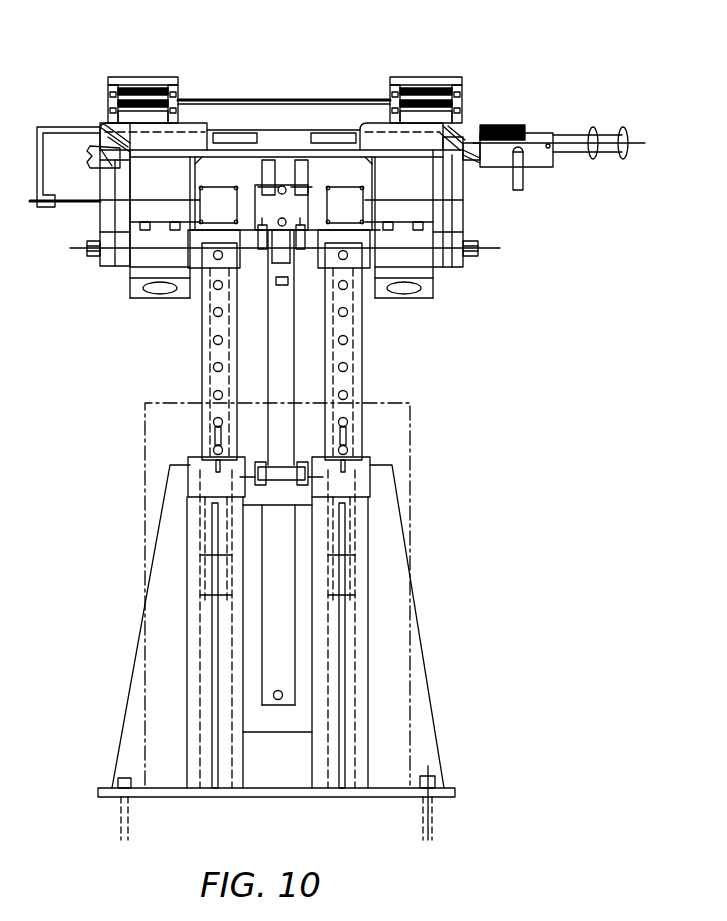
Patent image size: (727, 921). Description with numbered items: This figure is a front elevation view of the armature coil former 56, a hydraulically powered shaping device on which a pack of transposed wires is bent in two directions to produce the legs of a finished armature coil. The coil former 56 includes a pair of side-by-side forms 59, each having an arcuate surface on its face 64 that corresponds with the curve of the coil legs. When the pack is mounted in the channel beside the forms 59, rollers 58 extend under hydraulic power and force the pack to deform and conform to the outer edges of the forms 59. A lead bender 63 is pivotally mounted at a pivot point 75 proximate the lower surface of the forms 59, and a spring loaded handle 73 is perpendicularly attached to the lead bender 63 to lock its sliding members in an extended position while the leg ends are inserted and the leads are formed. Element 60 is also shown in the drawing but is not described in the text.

The armature coil former 56 is at (319, 421).
The rollers 58 is at (143, 77).
The forms 59 is at (112, 135).
The adjustment bolt 60 is at (86, 248).
The lead benders 63 is at (630, 140).
The face 64 is at (198, 127).
The spring loaded handle 73 is at (524, 180).
The pivot point 75 is at (470, 158).